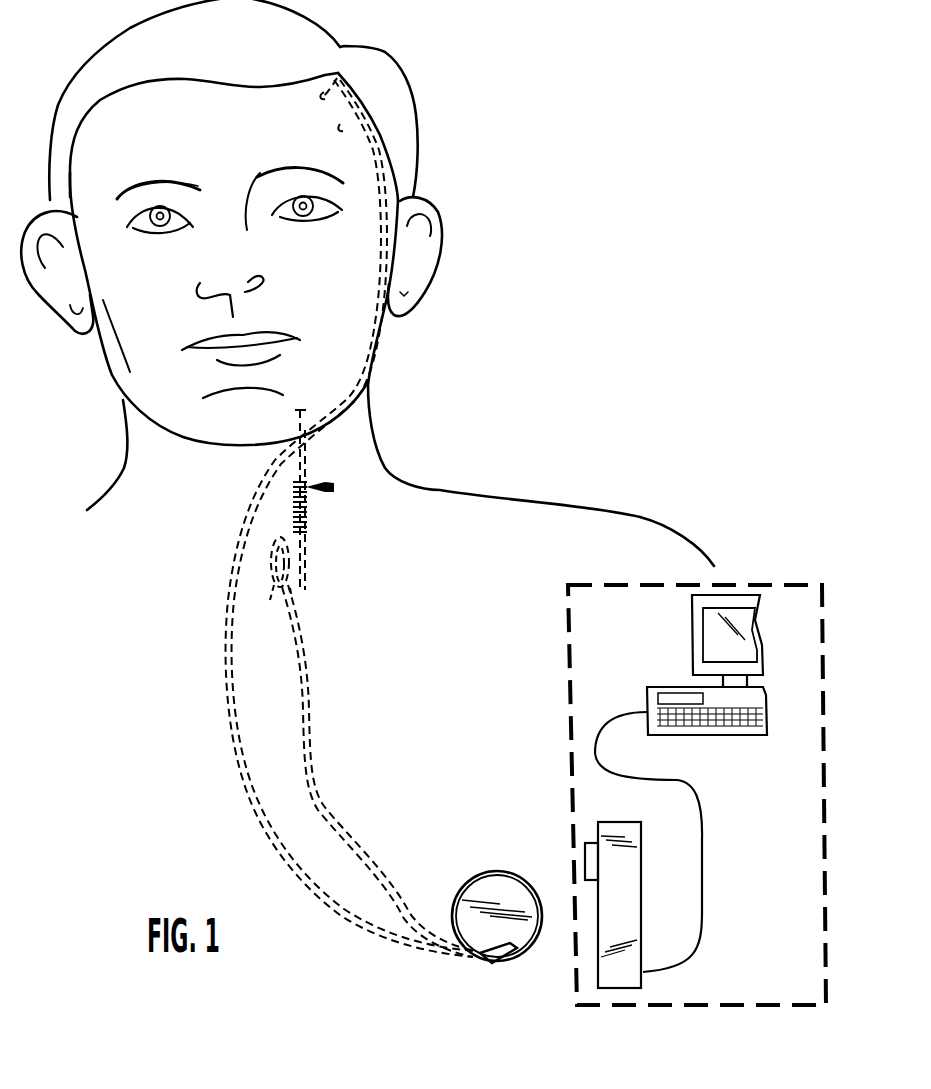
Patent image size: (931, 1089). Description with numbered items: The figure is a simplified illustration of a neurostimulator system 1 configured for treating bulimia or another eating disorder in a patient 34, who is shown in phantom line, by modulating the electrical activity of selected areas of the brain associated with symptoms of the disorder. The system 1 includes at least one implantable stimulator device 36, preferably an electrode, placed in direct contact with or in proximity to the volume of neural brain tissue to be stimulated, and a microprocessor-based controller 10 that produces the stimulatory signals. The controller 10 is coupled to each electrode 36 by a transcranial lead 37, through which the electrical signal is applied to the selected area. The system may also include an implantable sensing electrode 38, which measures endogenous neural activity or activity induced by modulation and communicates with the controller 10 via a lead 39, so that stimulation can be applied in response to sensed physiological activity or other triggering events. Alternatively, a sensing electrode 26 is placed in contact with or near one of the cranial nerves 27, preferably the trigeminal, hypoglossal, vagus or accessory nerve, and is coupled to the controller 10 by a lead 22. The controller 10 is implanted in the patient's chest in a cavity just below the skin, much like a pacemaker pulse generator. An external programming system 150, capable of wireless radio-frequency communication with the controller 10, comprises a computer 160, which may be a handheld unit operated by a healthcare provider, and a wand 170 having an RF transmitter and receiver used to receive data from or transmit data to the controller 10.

The neurostimulator system 1 is at (434, 671).
The controller 10 is at (495, 883).
The lead 22 is at (310, 547).
The sensing electrode 26 is at (333, 487).
The cranial nerve 27 is at (308, 453).
The patient 34 is at (108, 373).
The implantable stimulator device 36 is at (337, 77).
The transcranial lead 37 is at (340, 123).
The implantable sensing electrode 38 is at (320, 97).
The lead 39 is at (380, 163).
The external programming system 150 is at (822, 685).
The computer 160 is at (748, 735).
The wand 170 is at (602, 835).